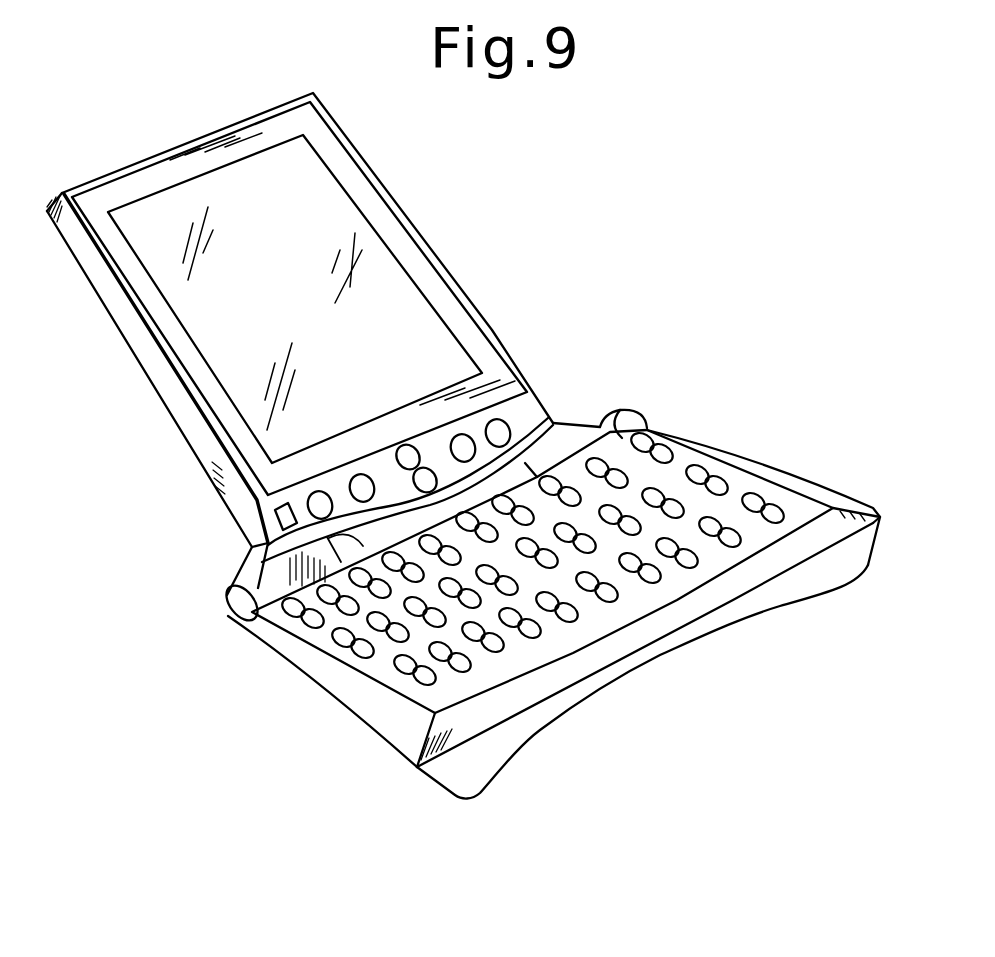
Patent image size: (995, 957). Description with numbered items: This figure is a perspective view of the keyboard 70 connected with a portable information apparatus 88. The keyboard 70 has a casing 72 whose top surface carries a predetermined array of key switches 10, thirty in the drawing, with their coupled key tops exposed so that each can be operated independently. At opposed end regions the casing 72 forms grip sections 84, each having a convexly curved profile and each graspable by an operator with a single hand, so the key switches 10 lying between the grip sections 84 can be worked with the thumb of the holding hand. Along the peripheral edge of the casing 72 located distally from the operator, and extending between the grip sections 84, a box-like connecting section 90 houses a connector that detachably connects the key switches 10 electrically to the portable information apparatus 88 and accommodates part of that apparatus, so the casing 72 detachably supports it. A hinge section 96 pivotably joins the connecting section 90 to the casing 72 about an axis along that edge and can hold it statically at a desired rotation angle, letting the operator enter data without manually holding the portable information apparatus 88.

The key switch 10 is at (400, 573).
The keyboard 70 is at (803, 433).
The casing 72 is at (693, 648).
The grip section 84 is at (740, 453).
The portable information apparatus 88 is at (417, 232).
The connecting section 90 is at (572, 428).
The hinge section 96 is at (267, 573).